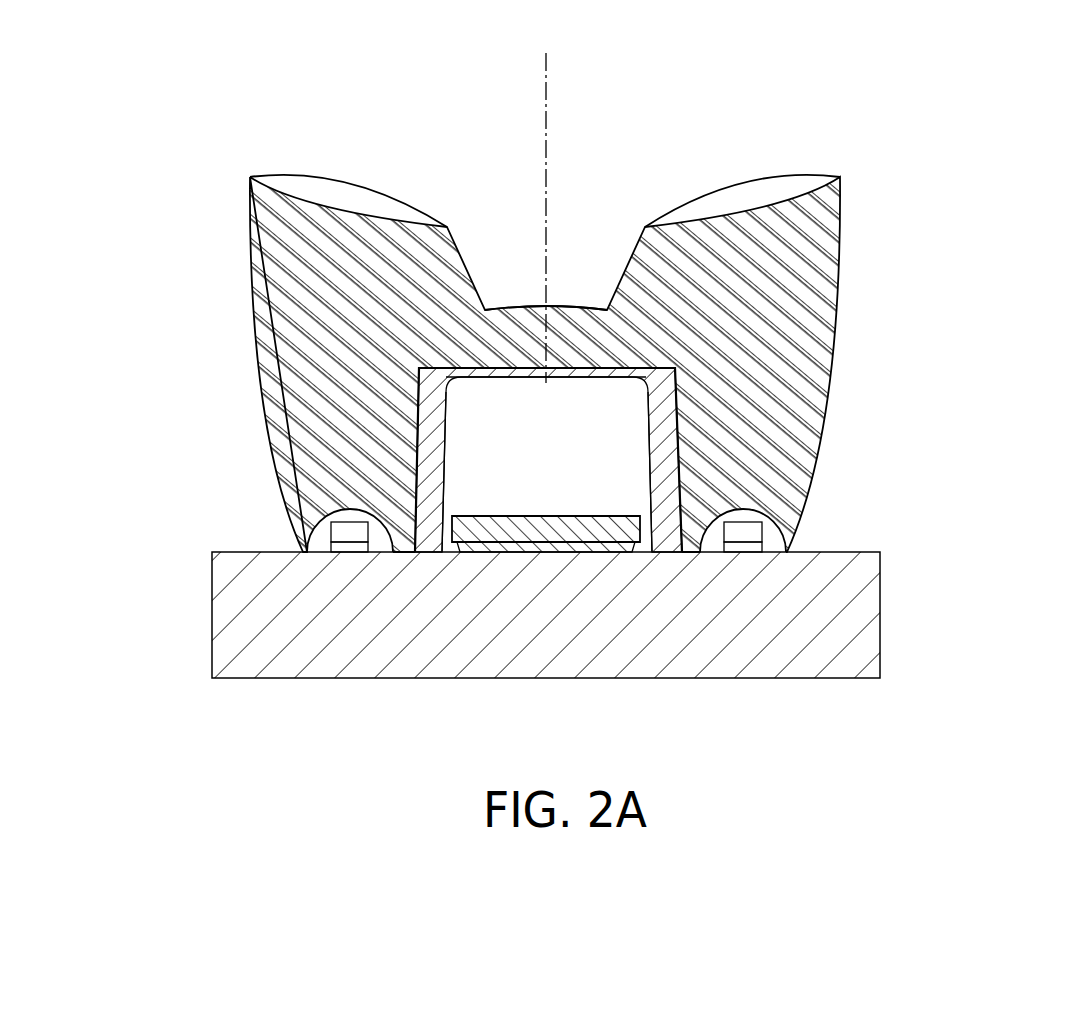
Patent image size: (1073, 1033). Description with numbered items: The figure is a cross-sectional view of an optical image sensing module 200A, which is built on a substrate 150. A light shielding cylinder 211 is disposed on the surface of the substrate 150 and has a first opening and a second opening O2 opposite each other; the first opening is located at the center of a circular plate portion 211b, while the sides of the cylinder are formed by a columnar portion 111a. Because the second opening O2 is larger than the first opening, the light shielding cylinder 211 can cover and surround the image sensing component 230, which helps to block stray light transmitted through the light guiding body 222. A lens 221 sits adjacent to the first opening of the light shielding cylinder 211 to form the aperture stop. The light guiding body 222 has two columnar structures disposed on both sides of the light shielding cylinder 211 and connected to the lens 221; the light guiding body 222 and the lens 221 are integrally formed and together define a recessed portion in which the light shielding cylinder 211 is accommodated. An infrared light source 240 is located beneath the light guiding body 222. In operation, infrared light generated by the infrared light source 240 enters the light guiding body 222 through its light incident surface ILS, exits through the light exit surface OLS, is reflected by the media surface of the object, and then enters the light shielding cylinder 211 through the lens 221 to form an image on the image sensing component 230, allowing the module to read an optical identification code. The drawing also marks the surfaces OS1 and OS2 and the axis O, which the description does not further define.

The optical image sensing module 200A is at (1018, 768).
The substrate 150 is at (815, 622).
The image sensing component 230 is at (613, 535).
The infrared light source 240 is at (757, 518).
The light shielding cylinder 211 is at (965, 332).
The circular plate portion 211b is at (603, 370).
The columnar portion 111a is at (660, 455).
The lens 221 is at (527, 311).
The light guiding body 222 is at (767, 303).
The light exit surface OLS is at (358, 175).
The light incident surface ILS is at (355, 520).
The first optical surface OS1 is at (492, 383).
The second optical surface OS2 is at (540, 294).
The optical axis O is at (547, 62).
The second opening O2 is at (570, 486).